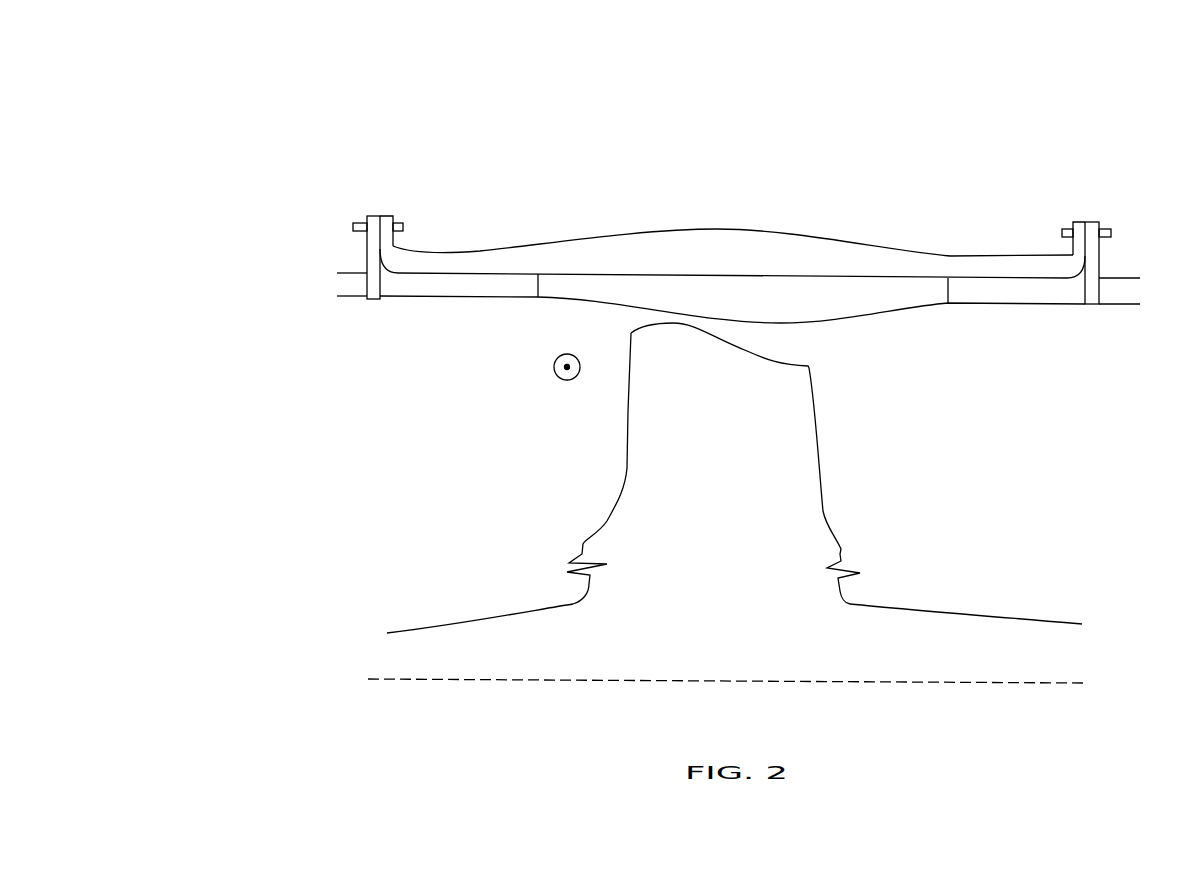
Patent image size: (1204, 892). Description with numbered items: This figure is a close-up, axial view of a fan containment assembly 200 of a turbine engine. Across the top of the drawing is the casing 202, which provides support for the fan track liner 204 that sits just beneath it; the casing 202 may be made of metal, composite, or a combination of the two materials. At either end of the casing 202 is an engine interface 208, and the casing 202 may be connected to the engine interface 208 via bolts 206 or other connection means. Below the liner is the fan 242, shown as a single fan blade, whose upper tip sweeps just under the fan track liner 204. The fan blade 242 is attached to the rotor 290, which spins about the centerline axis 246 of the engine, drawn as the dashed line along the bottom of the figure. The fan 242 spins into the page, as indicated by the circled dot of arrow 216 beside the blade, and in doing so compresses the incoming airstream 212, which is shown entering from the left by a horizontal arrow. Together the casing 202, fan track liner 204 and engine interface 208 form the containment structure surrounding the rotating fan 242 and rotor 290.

The assembly 200 is at (1022, 147).
The casing 202 is at (736, 263).
The fan track liner 204 is at (797, 313).
The bolts 206 is at (1113, 222).
The engine interface 208 is at (340, 294).
The incoming airstream 212 is at (338, 424).
The arrow 216 is at (552, 374).
The fan 242 is at (729, 500).
The centerline axis 246 is at (412, 680).
The rotor 290 is at (994, 646).